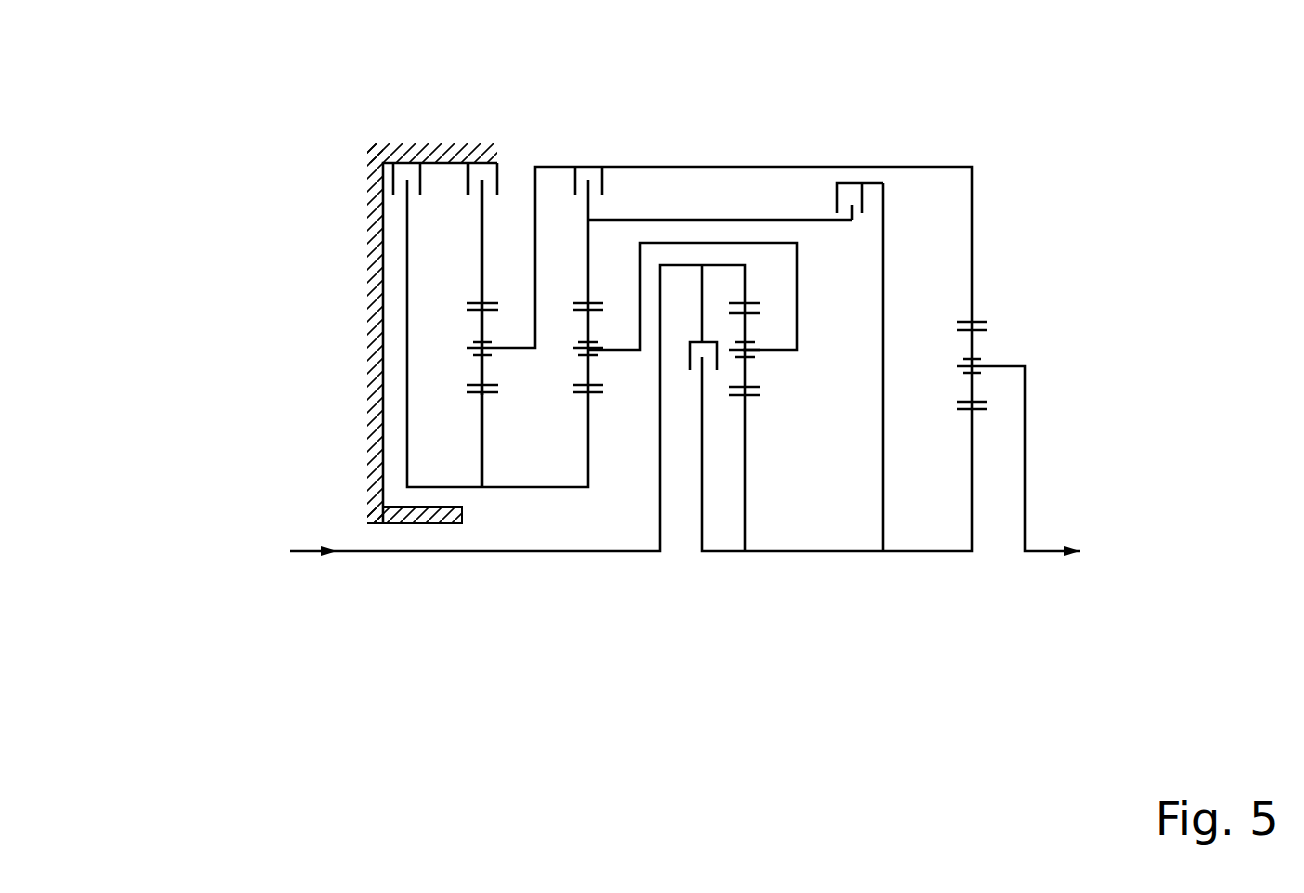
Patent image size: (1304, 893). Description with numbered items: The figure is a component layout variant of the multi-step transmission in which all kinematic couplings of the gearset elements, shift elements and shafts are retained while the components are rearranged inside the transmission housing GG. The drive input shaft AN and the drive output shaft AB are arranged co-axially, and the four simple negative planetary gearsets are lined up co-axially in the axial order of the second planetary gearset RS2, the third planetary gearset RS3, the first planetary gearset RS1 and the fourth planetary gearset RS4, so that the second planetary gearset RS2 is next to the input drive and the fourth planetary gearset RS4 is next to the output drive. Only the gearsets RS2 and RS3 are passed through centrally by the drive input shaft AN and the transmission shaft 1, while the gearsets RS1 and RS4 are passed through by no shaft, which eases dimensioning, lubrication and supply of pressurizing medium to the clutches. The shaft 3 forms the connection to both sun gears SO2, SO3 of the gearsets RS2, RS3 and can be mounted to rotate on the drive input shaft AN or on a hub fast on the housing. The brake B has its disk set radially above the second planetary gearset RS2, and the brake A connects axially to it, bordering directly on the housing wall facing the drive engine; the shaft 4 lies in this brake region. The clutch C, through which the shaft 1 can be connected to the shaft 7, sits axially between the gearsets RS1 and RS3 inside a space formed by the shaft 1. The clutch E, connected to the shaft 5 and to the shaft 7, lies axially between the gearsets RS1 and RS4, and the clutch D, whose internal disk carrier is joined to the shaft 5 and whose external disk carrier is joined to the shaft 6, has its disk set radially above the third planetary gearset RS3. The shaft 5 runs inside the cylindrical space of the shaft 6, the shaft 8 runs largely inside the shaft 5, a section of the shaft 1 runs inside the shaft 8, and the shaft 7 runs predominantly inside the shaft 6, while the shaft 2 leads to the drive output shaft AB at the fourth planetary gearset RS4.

The transmission housing GG is at (448, 147).
The transmission shaft 1 is at (747, 288).
The transmission shaft 2 is at (1002, 366).
The transmission shaft 3 is at (405, 232).
The transmission shaft 4 is at (483, 248).
The transmission shaft 5 is at (587, 253).
The transmission shaft 6 is at (520, 345).
The transmission shaft 7 is at (702, 462).
The transmission shaft 8 is at (622, 348).
The first planetary gearset RS1 is at (757, 363).
The second planetary gearset RS2 is at (455, 348).
The third planetary gearset RS3 is at (603, 360).
The fourth planetary gearset RS4 is at (983, 355).
The sun gear of the second planetary gearset SO2 is at (478, 447).
The sun gear of the third planetary gearset SO3 is at (587, 425).
The drive input shaft AN is at (291, 551).
The drive output shaft AB is at (1040, 551).
The brake A is at (406, 154).
The brake B is at (482, 154).
The clutch C is at (698, 342).
The clutch D is at (588, 164).
The clutch E is at (860, 213).